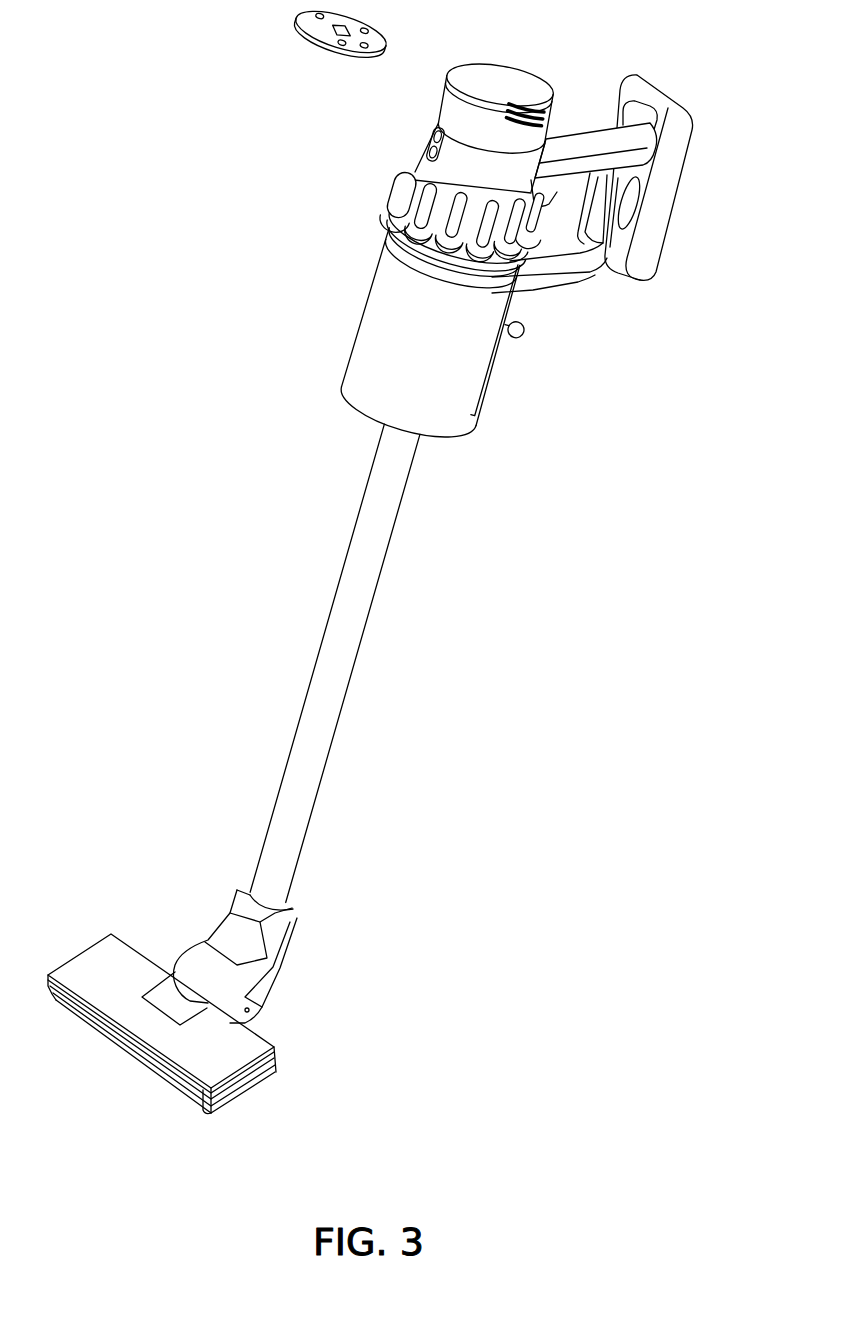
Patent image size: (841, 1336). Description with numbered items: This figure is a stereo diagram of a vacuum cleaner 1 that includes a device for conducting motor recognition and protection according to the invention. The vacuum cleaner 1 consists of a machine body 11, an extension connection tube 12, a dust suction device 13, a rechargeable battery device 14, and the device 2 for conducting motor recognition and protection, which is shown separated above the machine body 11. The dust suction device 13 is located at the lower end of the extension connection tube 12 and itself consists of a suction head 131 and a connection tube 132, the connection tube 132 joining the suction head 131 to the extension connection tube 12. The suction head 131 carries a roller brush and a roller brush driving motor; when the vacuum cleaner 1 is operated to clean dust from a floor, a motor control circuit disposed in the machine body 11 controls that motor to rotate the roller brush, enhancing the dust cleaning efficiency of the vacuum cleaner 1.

The vacuum cleaner 1 is at (190, 524).
The device for conducting motor recognition and protection 2 is at (432, 92).
The machine body 11 is at (391, 171).
The extension connection tube 12 is at (383, 594).
The dust suction device 13 is at (258, 1020).
The suction head 131 is at (283, 1062).
The connection tube 132 is at (288, 956).
The rechargeable battery device 14 is at (676, 225).